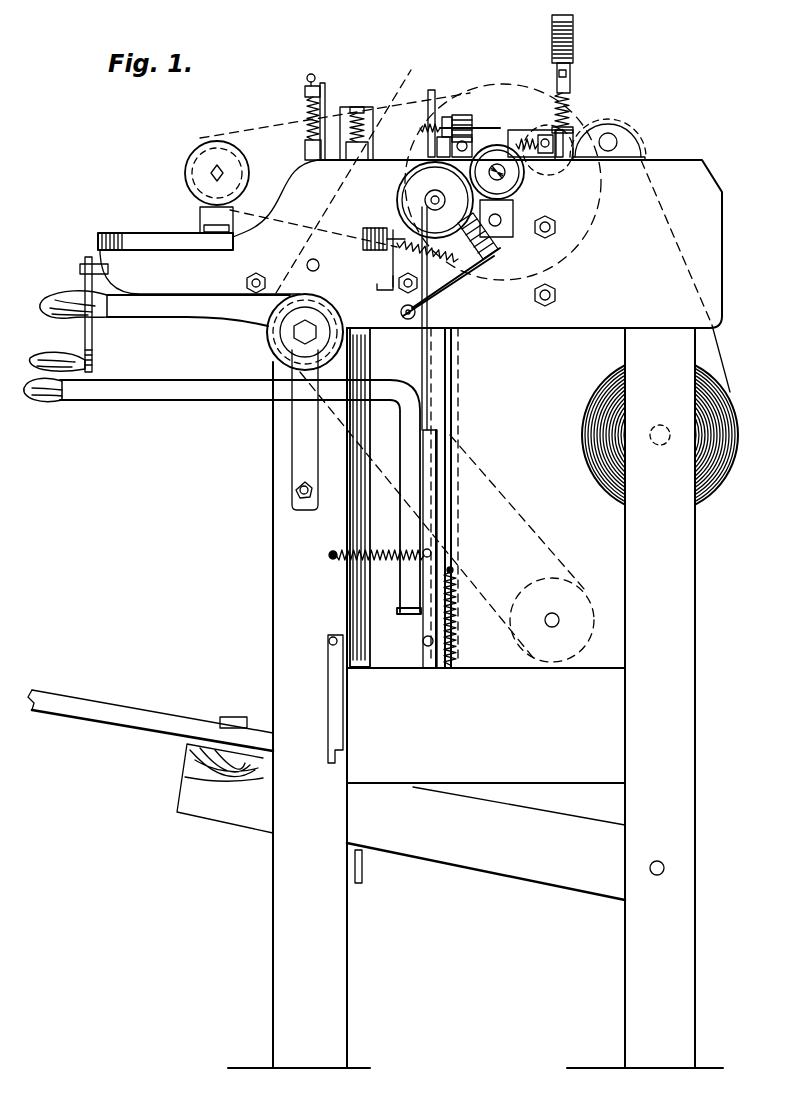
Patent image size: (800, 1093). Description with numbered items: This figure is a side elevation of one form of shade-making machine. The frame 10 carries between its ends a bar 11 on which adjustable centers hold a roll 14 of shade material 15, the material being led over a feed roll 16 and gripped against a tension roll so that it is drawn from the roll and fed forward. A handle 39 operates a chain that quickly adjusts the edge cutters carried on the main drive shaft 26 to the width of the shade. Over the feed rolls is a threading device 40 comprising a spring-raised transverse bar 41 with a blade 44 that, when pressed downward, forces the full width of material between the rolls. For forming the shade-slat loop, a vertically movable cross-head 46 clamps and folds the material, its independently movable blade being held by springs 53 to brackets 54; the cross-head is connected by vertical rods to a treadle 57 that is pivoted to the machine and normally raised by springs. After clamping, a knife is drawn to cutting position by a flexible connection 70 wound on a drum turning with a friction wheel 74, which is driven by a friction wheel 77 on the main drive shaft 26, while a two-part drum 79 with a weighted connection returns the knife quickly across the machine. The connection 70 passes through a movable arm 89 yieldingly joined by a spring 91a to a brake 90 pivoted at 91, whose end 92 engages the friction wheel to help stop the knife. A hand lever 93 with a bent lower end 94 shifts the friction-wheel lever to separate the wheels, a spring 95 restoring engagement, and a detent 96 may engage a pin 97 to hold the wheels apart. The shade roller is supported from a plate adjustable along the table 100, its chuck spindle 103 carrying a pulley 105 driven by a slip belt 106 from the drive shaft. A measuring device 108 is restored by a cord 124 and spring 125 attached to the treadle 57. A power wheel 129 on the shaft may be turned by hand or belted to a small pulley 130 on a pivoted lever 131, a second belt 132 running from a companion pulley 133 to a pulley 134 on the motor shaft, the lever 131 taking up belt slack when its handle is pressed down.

The frame 10 is at (270, 612).
The bar 11 is at (534, 126).
The roll 14 is at (408, 198).
The shade material 15 is at (714, 333).
The roll 16 is at (628, 130).
The main drive shaft 26 is at (498, 246).
The handle 39 is at (66, 329).
The device 40 is at (585, 54).
The transverse bar 41 is at (552, 48).
The blade 44 is at (574, 101).
The cross-head 46 is at (337, 117).
The springs 53 is at (307, 107).
The brackets 54 is at (318, 90).
The treadle 57 is at (103, 707).
The flexible connection 70 is at (363, 243).
The friction wheel 74 is at (712, 502).
The friction wheel 77 is at (505, 179).
The drum 79 is at (518, 130).
The movable arm 89 is at (386, 291).
The brake 90 is at (433, 263).
The pivot 91 is at (409, 320).
The spring 91a is at (432, 272).
The end of brake 92 is at (533, 274).
The lever 93 is at (196, 404).
The lower end of lever 94 is at (408, 604).
The spring 95 is at (348, 564).
The detent 96 is at (330, 736).
The pin 97 is at (431, 648).
The table 100 is at (156, 225).
The spindle 103 is at (223, 171).
The pulley 105 is at (200, 173).
The slip belt 106 is at (244, 121).
The measuring device 108 is at (446, 124).
The flexible connection 124 is at (453, 427).
The spring 125 is at (460, 642).
The wheel 129 is at (440, 82).
The pulley 130 is at (268, 339).
The lever 131 is at (183, 307).
The belt 132 is at (517, 512).
The pulley 133 is at (326, 312).
The pulley 134 is at (577, 592).